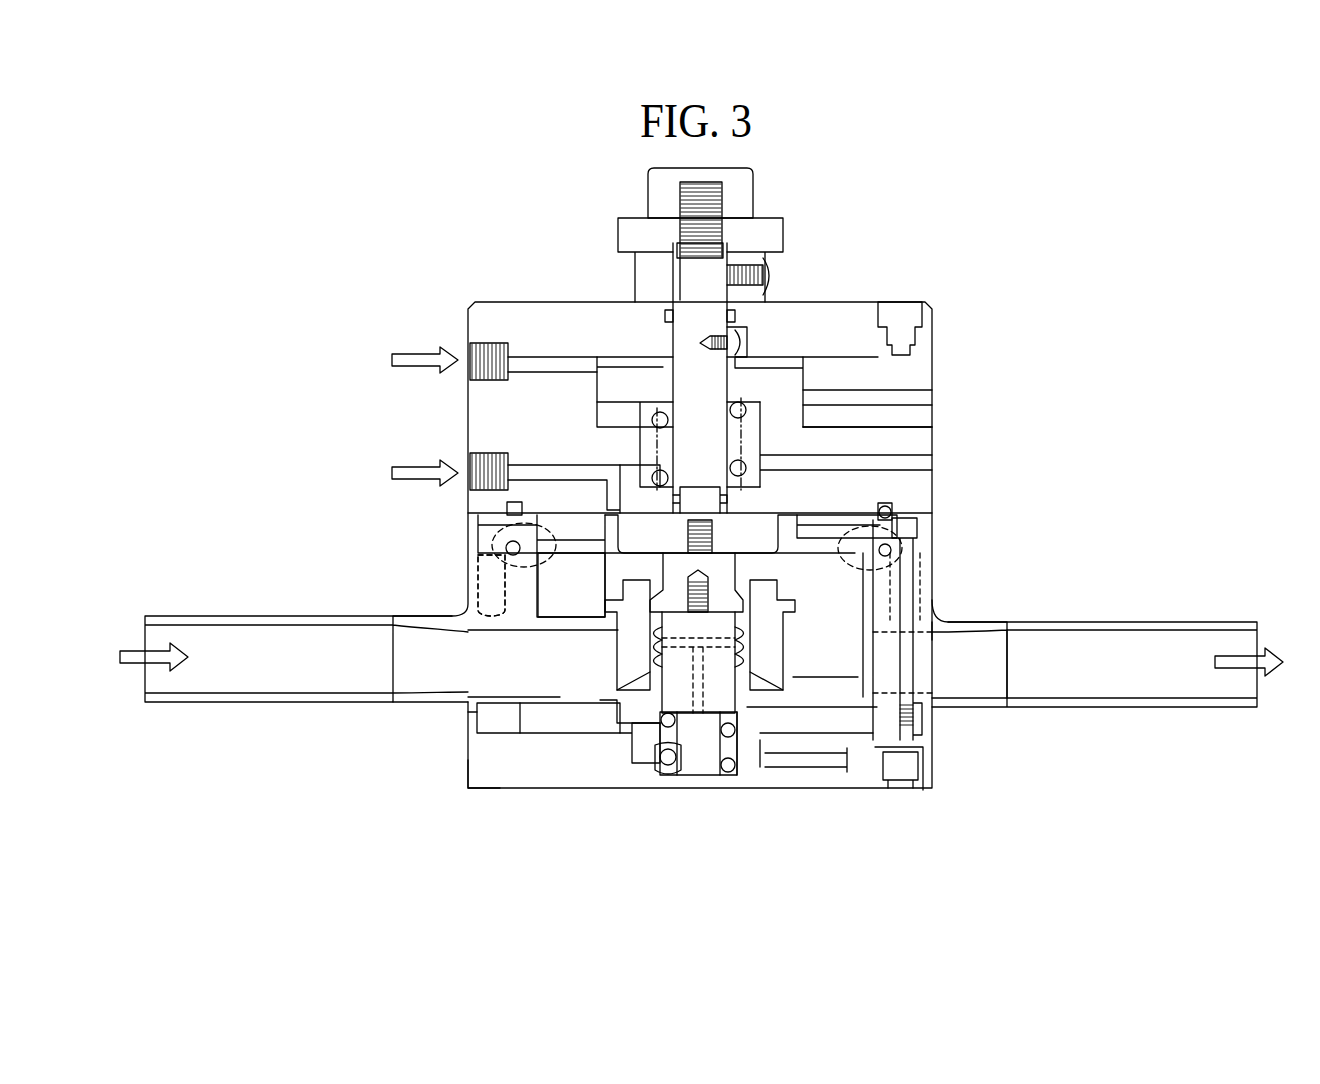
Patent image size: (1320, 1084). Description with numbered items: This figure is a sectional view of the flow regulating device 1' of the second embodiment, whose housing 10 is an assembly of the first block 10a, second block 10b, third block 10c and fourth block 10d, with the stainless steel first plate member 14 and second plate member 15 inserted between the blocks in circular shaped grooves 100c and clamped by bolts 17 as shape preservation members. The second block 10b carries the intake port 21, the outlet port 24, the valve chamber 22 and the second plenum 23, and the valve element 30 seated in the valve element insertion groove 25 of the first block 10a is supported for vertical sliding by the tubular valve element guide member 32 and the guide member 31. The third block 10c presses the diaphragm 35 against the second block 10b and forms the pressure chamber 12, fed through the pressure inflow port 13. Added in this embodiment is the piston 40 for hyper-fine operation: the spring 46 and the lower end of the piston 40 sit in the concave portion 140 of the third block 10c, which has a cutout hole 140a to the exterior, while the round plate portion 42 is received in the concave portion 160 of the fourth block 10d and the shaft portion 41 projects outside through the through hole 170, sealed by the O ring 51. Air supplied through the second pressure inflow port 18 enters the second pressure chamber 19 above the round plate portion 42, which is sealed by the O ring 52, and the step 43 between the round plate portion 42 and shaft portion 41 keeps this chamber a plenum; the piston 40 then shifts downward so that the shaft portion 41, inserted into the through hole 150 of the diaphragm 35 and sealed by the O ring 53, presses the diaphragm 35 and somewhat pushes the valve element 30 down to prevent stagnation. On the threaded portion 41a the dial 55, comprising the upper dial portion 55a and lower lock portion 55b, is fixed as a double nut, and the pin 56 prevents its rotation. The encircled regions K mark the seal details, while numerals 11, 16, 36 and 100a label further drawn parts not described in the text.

The flow regulating device 1' is at (701, 485).
The housing 10 is at (933, 421).
The first block 10a is at (480, 758).
The second block 10b is at (937, 610).
The third block 10c is at (917, 440).
The fourth block 10d is at (918, 393).
The passage 11 is at (523, 490).
The pressure chamber 12 is at (913, 537).
The pressure inflow port 13 is at (470, 456).
The first plate member 14 is at (483, 527).
The second plate member 15 is at (480, 718).
The rod 16 is at (922, 672).
The bolts 17 is at (1005, 648).
The second pressure inflow port 18 is at (470, 350).
The second pressure chamber 19 is at (640, 350).
The intake port 21 is at (255, 680).
The valve chamber 22 is at (615, 737).
The second plenum 23 is at (560, 590).
The outlet port 24 is at (1118, 680).
The valve element insertion groove 25 is at (700, 745).
The valve element 30 is at (742, 592).
The guide member 31 is at (760, 707).
The valve element guide member 32 is at (635, 743).
The diaphragm 35 is at (883, 503).
The roller 36 is at (715, 730).
The piston 40 is at (888, 302).
The shaft portion 41 is at (757, 302).
The threaded portion 41a is at (680, 203).
The round plate portion 42 is at (773, 370).
The step 43 is at (650, 352).
The spring 46 is at (920, 425).
The O ring 51 is at (740, 340).
The O ring 52 is at (597, 385).
The O ring 53 is at (470, 483).
The dial 55 is at (888, 145).
The upper dial portion 55a is at (748, 187).
The lower lock portion 55b is at (772, 236).
The pin 56 is at (683, 335).
The passage 100a is at (538, 718).
The circular shaped groove 100c is at (490, 592).
The concave portion 140 is at (640, 445).
The cutout hole 140a is at (917, 458).
The through hole 150 is at (905, 472).
The concave portion 160 is at (915, 385).
The through hole 170 is at (683, 293).
The detail region K is at (483, 533).